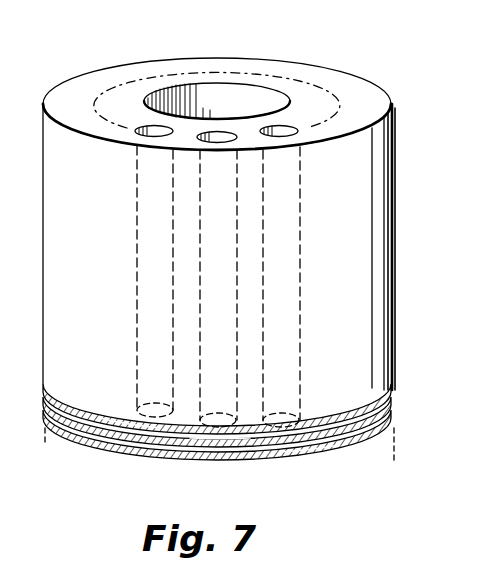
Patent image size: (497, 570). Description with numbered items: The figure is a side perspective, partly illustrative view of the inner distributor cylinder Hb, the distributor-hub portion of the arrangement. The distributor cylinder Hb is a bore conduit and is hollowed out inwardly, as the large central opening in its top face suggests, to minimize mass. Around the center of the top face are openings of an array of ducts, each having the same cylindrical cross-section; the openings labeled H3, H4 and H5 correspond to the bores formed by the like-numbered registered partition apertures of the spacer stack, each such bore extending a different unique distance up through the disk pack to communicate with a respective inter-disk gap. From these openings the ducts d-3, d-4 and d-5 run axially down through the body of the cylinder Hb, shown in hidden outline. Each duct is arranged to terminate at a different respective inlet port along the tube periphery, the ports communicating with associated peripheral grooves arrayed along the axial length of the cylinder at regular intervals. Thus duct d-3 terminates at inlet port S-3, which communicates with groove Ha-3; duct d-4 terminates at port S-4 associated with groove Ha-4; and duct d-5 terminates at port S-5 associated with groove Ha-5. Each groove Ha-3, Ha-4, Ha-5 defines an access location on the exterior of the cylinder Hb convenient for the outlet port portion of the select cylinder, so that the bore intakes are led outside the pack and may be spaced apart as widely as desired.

The distributor cylinder Hb is at (398, 188).
The partition aperture H3 is at (148, 126).
The partition aperture H4 is at (222, 132).
The partition aperture H5 is at (296, 126).
The duct d-3 is at (143, 212).
The duct d-4 is at (222, 326).
The duct d-5 is at (290, 386).
The inlet groove Ha-3 is at (392, 390).
The inlet groove Ha-4 is at (396, 398).
The inlet groove Ha-5 is at (396, 423).
The inlet port S-3 is at (130, 417).
The inlet port S-4 is at (217, 441).
The inlet port S-5 is at (307, 452).